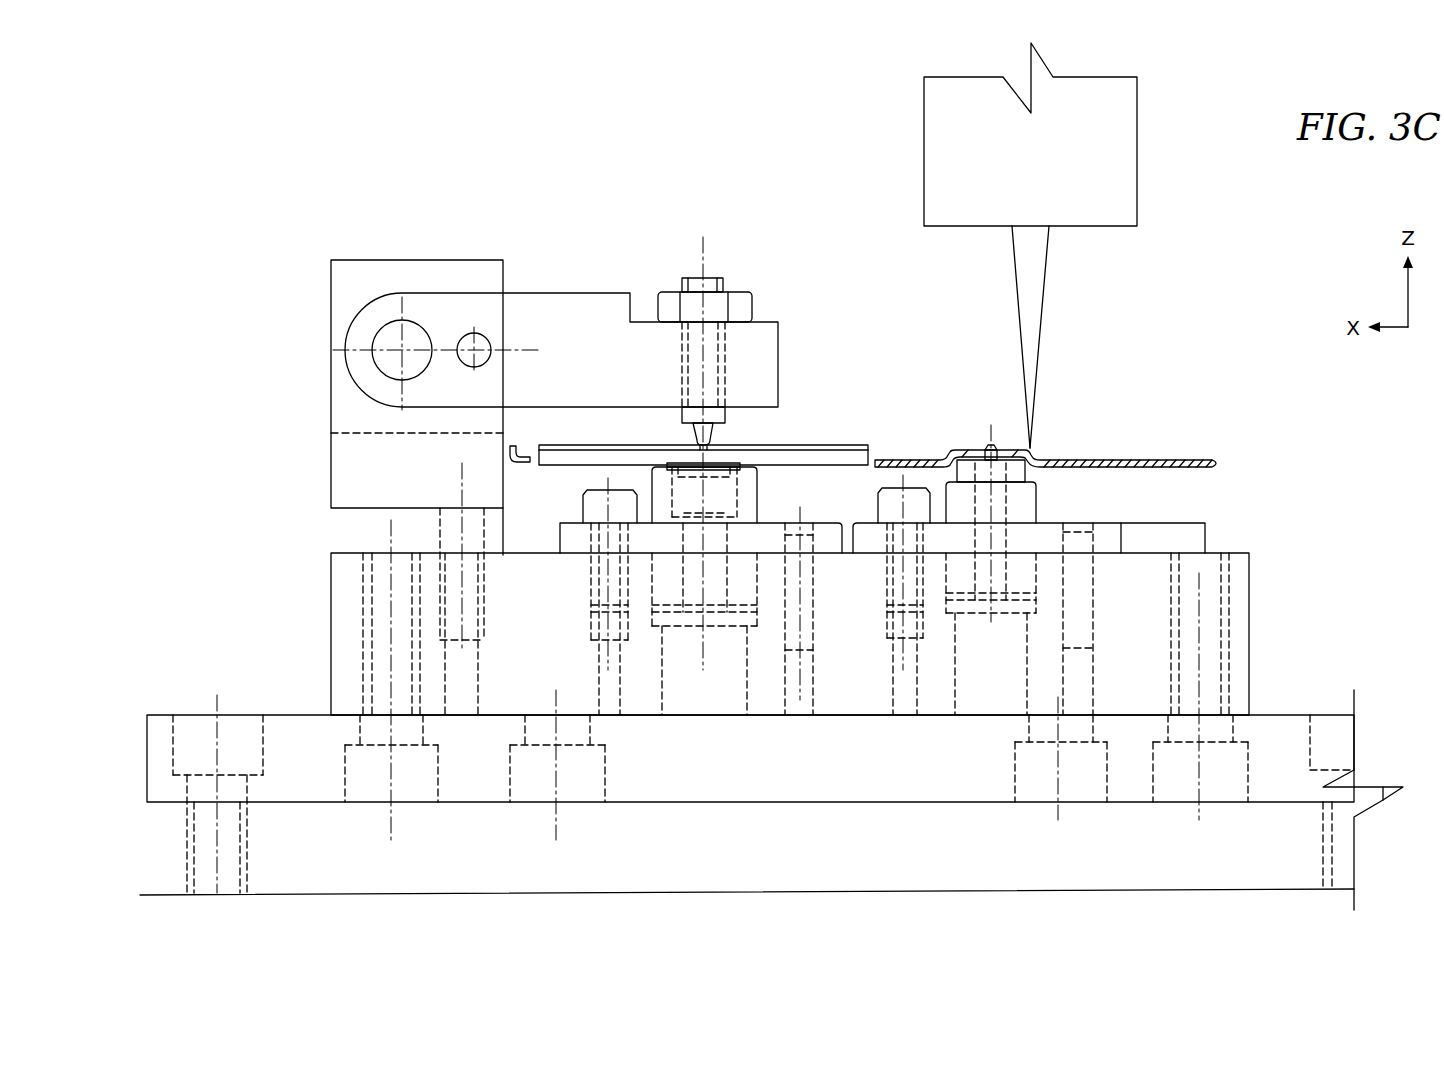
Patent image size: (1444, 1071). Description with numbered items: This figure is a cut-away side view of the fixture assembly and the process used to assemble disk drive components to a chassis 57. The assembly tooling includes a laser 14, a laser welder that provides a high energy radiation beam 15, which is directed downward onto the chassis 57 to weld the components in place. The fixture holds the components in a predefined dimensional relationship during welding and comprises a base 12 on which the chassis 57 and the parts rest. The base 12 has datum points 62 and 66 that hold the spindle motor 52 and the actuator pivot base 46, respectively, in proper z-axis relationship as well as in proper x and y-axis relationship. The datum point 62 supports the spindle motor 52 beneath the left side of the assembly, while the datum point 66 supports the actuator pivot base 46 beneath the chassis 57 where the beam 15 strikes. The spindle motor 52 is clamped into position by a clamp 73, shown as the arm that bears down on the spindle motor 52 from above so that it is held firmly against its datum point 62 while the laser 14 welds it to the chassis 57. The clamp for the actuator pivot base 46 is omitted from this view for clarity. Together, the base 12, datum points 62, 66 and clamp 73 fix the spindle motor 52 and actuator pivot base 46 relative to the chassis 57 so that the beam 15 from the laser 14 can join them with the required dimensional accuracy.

The base 12 is at (1228, 627).
The laser 14 is at (1015, 177).
The high energy radiation beam 15 is at (1037, 330).
The actuator pivot base 46 is at (981, 446).
The spindle motor 52 is at (809, 447).
The chassis 57 is at (1118, 460).
The datum point 62 is at (737, 497).
The datum point 66 is at (1015, 470).
The clamp 73 is at (632, 362).